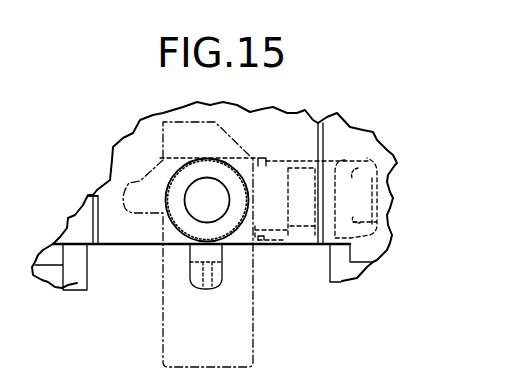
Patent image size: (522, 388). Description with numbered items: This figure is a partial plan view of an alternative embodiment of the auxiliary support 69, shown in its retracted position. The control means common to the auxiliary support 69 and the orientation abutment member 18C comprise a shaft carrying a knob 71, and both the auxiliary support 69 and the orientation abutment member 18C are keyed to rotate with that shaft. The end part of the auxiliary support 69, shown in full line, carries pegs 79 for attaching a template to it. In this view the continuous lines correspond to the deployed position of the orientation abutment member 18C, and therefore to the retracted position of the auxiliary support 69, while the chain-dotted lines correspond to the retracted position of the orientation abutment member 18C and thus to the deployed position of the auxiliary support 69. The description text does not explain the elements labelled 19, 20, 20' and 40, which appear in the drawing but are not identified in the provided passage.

The thin wall portion 19 is at (121, 254).
The flange 20 is at (78, 283).
The flange 20' is at (326, 294).
The housing block 40 is at (286, 144).
The auxiliary support 69 is at (303, 155).
The knob 71 is at (231, 216).
The pegs 79 is at (359, 170).
The orientation abutment member 18C is at (195, 281).